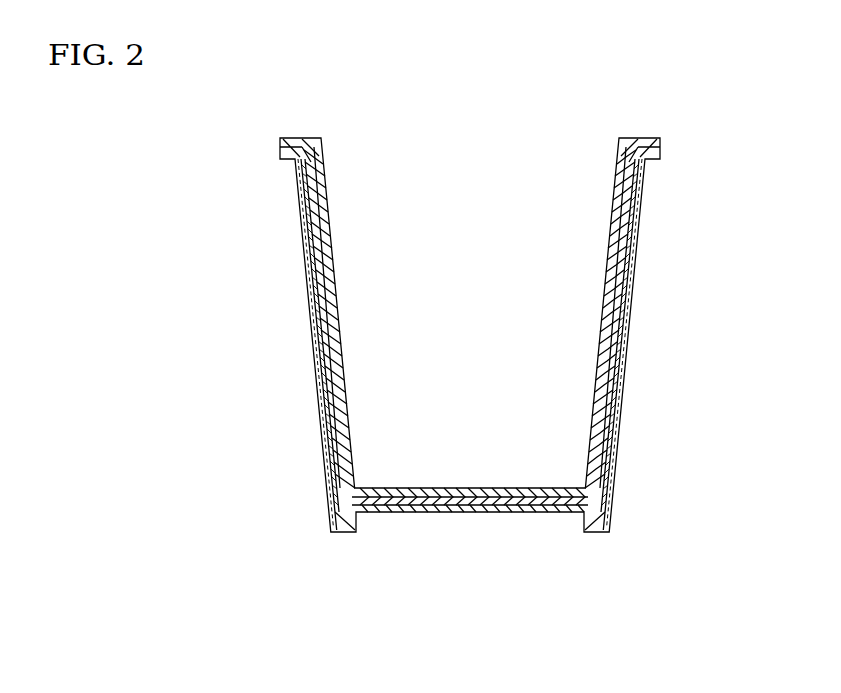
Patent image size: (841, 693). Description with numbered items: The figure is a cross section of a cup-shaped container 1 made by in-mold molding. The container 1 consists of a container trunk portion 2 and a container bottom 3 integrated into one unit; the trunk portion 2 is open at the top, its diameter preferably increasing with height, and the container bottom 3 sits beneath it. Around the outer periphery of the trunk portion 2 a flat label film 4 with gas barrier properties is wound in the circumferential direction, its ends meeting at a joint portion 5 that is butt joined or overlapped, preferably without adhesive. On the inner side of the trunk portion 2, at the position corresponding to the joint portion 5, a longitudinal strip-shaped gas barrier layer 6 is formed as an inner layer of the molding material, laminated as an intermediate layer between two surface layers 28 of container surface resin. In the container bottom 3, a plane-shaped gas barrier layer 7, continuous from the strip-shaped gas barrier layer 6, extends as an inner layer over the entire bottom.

The cup-shaped container 1 is at (284, 349).
The container trunk portion 2 is at (291, 428).
The container bottom 3 is at (395, 524).
The label film 4 is at (623, 360).
The joint portion 5 is at (635, 293).
The longitudinal strip-shaped gas barrier layer 6 is at (606, 427).
The plane-shaped gas barrier layer 7 is at (522, 512).
The surface layers 28 is at (305, 214).